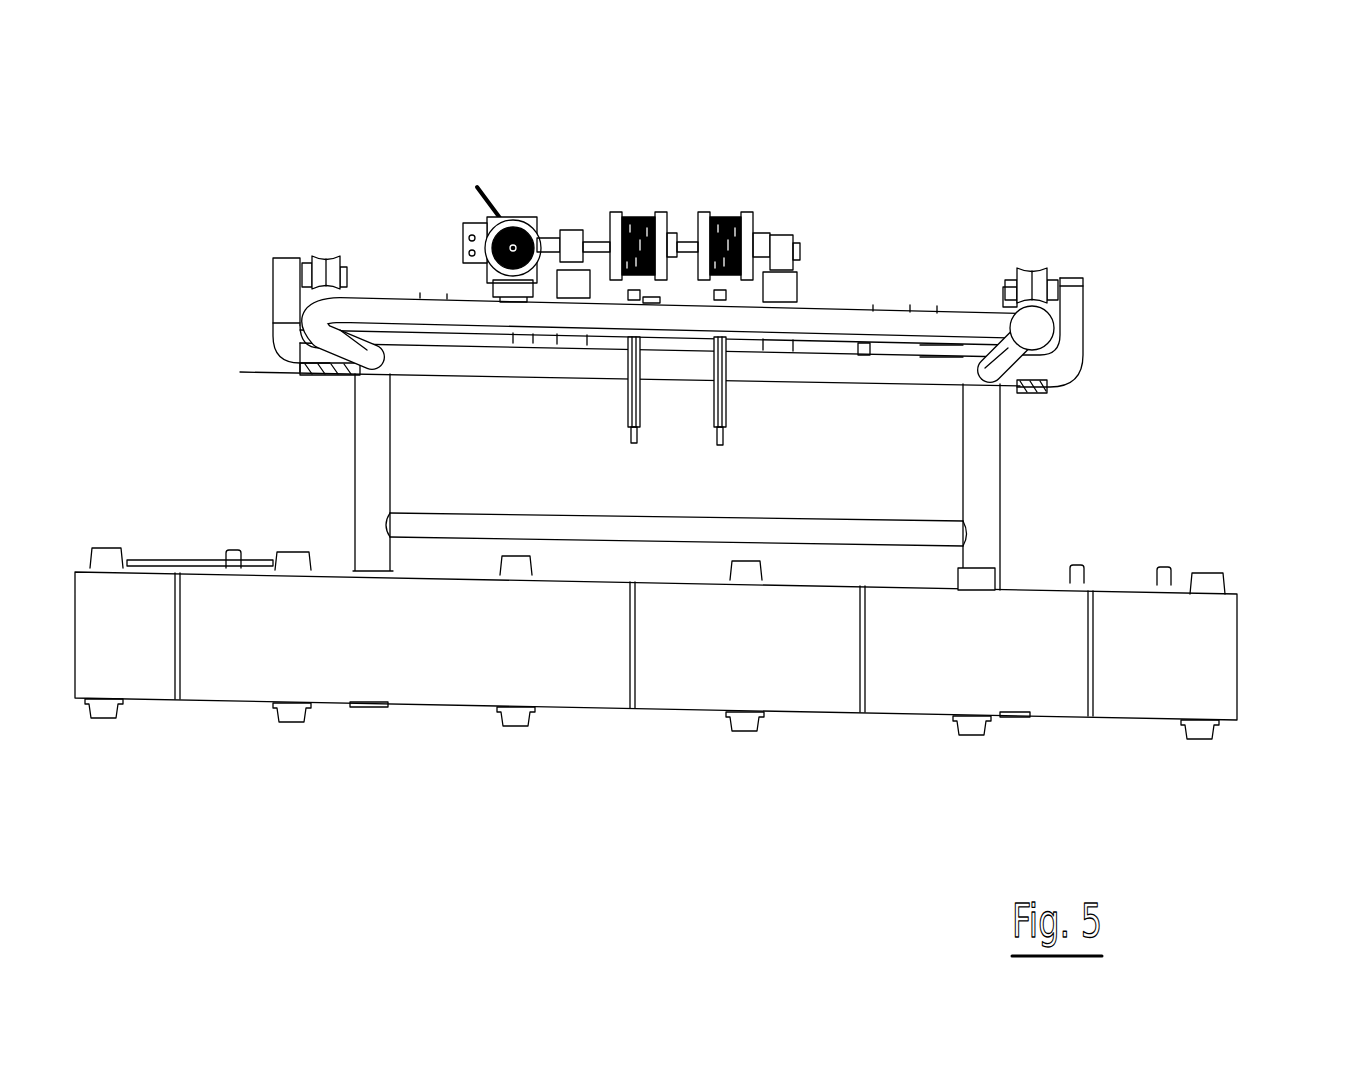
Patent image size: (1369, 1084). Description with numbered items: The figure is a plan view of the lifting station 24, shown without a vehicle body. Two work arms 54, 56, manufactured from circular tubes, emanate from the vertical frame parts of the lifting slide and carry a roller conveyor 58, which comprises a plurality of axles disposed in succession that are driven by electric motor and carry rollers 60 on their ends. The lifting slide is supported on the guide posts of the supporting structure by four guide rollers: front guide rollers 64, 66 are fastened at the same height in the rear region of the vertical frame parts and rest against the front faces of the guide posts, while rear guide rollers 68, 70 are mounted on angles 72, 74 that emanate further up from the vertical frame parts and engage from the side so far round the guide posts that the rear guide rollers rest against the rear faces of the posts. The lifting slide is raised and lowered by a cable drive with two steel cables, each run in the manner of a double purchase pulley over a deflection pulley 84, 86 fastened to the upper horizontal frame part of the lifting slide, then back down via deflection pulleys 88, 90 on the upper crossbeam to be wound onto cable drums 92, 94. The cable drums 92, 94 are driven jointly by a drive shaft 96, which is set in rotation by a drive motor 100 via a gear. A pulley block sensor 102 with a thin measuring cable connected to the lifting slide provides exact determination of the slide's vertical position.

The lifting station 24 is at (1243, 306).
The work arm 54 is at (365, 487).
The work arm 56 is at (980, 470).
The roller conveyor 58 is at (595, 664).
The rollers 60 is at (745, 722).
The front guide roller 64 is at (1043, 388).
The front guide roller 66 is at (300, 362).
The rear guide roller 68 is at (1040, 272).
The rear guide roller 70 is at (317, 253).
The angle 72 is at (1070, 300).
The angle 74 is at (285, 280).
The deflection pulley 84 is at (627, 390).
The deflection pulley 86 is at (730, 395).
The deflection pulley 88 is at (645, 298).
The deflection pulley 90 is at (730, 300).
The cable drum 92 is at (637, 210).
The cable drum 94 is at (725, 210).
The drive shaft 96 is at (610, 207).
The drive motor 100 is at (503, 205).
The pulley block sensor 102 is at (862, 345).